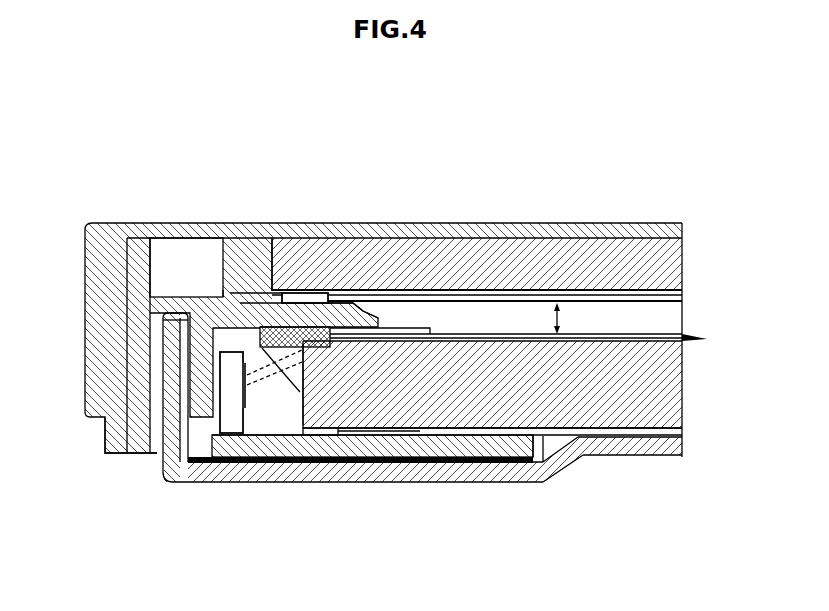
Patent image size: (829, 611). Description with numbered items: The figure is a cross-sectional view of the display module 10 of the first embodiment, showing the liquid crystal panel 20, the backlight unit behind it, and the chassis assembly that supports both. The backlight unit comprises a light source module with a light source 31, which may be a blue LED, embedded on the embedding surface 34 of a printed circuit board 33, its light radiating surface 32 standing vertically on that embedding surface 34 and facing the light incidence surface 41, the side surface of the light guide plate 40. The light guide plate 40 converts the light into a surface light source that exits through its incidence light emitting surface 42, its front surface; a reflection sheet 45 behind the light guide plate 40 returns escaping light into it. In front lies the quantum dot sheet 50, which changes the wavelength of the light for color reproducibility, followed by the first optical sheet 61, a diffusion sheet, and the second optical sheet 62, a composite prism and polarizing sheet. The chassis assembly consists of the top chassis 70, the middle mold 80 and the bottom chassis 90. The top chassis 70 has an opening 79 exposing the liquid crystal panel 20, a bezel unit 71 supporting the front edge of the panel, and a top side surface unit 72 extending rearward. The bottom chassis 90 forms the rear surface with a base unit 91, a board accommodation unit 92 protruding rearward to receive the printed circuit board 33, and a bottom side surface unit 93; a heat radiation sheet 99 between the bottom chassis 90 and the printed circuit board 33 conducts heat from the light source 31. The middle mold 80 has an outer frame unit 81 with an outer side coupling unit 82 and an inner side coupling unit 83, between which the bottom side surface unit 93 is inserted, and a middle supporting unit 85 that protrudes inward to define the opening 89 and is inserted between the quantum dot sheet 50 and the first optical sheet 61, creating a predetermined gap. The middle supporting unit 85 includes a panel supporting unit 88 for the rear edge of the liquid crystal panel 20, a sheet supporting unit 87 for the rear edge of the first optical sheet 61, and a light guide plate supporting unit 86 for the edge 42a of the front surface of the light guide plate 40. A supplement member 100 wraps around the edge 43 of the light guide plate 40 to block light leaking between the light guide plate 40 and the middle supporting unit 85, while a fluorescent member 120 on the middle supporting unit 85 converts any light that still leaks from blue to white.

The display module 10 is at (511, 124).
The liquid crystal panel 20 is at (468, 262).
The light source 31 is at (233, 432).
The light radiating surface 32 is at (250, 445).
The printed circuit board 33 is at (300, 390).
The embedding surface 34 is at (275, 432).
The light guide plate 40 is at (668, 386).
The light incidence surface 41 is at (302, 404).
The incidence light emitting surface 42 is at (518, 432).
The edge of front surface 42a is at (352, 345).
The edge of light guide plate 43 is at (305, 436).
The reflection sheet 45 is at (545, 465).
The quantum dot sheet 50 is at (657, 334).
The first optical sheet 61 is at (526, 303).
The second optical sheet 62 is at (495, 298).
The top chassis 70 is at (113, 219).
The bezel unit 71 is at (172, 222).
The top side surface unit 72 is at (93, 294).
The opening 79 is at (292, 296).
The middle mold 80 is at (118, 374).
The outer frame unit 81 is at (182, 546).
The outer side coupling unit 82 is at (134, 455).
The inner side coupling unit 83 is at (181, 465).
The middle supporting unit 85 is at (362, 318).
The light guide plate supporting unit 86 is at (243, 322).
The sheet supporting unit 87 is at (342, 324).
The panel supporting unit 88 is at (262, 318).
The opening 89 is at (360, 305).
The bottom chassis 90 is at (410, 492).
The base unit 91 is at (625, 456).
The board accommodation unit 92 is at (478, 485).
The bottom side surface unit 93 is at (172, 342).
The heat radiation sheet 99 is at (455, 464).
The supplement member 100 is at (292, 337).
The fluorescent member 120 is at (398, 300).